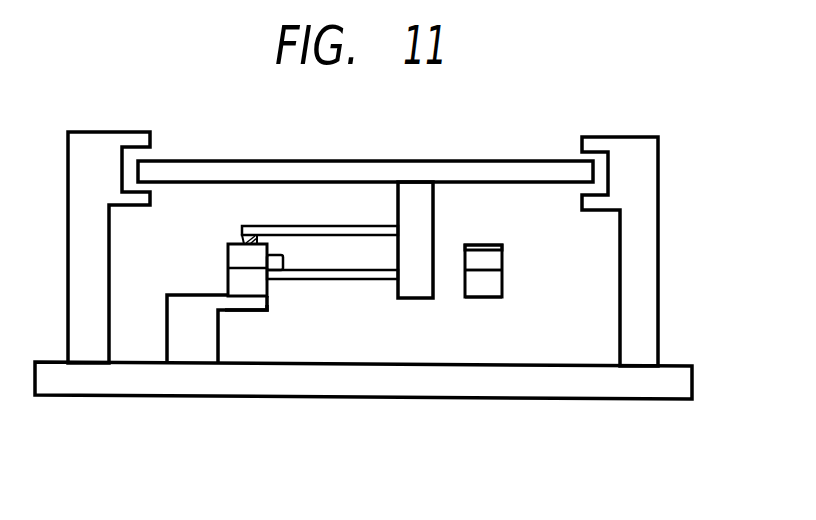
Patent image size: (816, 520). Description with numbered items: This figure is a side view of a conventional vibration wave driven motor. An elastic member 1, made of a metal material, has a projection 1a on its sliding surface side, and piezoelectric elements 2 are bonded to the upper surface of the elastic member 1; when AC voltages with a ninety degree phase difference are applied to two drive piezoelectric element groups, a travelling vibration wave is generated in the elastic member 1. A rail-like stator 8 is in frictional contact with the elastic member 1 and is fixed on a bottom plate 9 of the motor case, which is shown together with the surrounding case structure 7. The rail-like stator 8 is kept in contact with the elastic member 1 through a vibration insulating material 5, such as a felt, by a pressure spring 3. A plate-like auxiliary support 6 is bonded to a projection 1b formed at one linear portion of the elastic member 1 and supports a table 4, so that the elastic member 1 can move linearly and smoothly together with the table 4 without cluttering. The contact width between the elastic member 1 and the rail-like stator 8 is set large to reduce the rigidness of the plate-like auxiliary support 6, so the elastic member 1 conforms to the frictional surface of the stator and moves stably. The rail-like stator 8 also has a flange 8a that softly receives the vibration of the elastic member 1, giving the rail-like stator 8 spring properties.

The elastic member 1 is at (498, 262).
The projection 1a is at (500, 285).
The projection 1b is at (272, 256).
The piezoelectric elements 2 is at (480, 243).
The pressure spring 3 is at (339, 228).
The table 4 is at (472, 168).
The vibration insulating material 5 is at (241, 238).
The plate-like auxiliary support 6 is at (315, 280).
The frame 7 is at (652, 185).
The rail-like stator 8 is at (197, 350).
The flange 8a is at (262, 300).
The bottom plate 9 is at (549, 390).